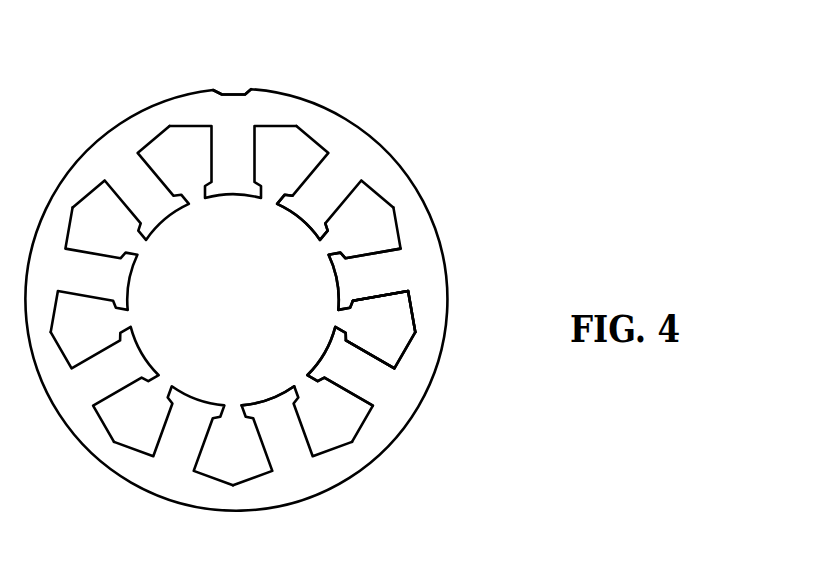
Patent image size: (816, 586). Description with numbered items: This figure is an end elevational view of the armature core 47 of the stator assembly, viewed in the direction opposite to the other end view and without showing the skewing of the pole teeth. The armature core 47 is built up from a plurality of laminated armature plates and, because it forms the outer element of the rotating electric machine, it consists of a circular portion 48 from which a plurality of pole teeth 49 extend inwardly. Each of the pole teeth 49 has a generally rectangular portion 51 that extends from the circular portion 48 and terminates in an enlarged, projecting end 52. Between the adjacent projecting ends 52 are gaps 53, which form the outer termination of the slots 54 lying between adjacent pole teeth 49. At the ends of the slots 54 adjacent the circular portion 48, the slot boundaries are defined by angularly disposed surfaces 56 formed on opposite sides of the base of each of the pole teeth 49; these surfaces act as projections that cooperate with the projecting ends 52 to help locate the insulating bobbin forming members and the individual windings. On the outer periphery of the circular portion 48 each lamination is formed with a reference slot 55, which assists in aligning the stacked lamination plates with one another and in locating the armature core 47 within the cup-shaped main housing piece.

The armature core 47 is at (284, 258).
The circular portion 48 is at (236, 259).
The pole teeth 49 is at (372, 385).
The rectangular portions 51 is at (377, 260).
The projecting ends 52 is at (282, 403).
The gaps 53 is at (322, 247).
The slots 54 is at (402, 322).
The reference slot 55 is at (235, 90).
The angularly disposed surfaces 56 is at (405, 293).